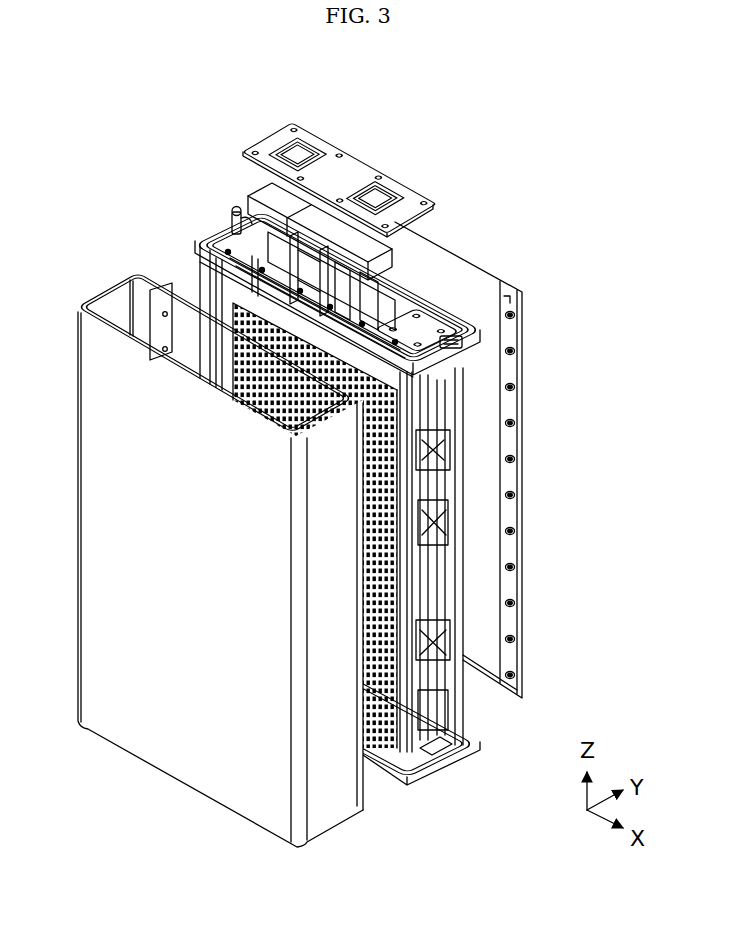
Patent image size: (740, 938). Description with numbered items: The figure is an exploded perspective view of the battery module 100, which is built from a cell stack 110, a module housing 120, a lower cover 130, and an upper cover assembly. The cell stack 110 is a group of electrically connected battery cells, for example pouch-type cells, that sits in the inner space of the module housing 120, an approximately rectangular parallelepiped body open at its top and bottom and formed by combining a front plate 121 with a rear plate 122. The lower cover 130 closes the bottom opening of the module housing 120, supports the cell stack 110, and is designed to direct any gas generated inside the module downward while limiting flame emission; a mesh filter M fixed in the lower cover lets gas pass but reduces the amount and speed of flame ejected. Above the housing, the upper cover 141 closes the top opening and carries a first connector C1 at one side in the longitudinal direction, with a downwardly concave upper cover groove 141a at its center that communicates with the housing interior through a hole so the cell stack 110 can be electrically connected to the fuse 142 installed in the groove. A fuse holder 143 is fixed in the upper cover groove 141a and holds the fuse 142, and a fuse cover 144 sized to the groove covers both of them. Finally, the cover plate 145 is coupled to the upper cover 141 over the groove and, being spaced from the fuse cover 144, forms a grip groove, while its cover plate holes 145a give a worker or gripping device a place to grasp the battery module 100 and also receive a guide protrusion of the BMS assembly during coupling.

The battery module 100 is at (193, 104).
The cell stack 110 is at (455, 452).
The module housing 120 is at (497, 853).
The front plate 121 is at (343, 815).
The rear plate 122 is at (513, 688).
The lower cover 130 is at (418, 772).
The upper cover 141 is at (448, 308).
The upper cover groove 141a is at (402, 310).
The fuse 142 is at (290, 249).
The fuse holder 143 is at (290, 282).
The fuse cover 144 is at (262, 189).
The cover plate 145 is at (353, 160).
The cover plate hole 145a is at (306, 141).
The first connector C1 is at (238, 225).
The mesh filter M is at (433, 752).